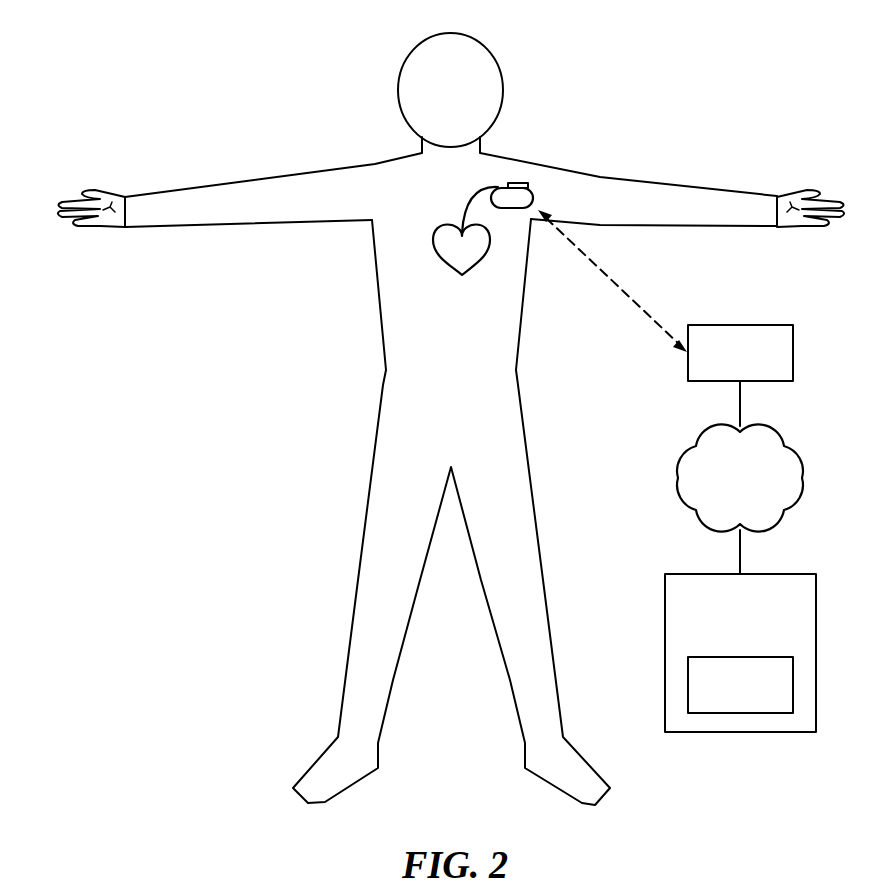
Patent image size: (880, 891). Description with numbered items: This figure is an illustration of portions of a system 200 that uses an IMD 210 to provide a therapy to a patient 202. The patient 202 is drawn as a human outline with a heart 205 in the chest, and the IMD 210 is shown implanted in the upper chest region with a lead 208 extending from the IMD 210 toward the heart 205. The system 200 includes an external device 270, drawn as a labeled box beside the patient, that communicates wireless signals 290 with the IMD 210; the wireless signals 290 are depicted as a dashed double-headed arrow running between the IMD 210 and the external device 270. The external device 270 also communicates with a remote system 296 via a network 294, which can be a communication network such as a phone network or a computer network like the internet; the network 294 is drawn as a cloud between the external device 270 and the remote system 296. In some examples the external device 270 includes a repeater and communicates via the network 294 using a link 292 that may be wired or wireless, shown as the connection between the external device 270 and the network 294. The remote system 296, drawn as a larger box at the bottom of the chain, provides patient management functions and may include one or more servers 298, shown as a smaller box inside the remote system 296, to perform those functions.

The system 200 is at (748, 48).
The patient 202 is at (378, 295).
The heart 205 is at (441, 264).
The lead 208 is at (468, 195).
The IMD 210 is at (516, 183).
The external device 270 is at (742, 324).
The wireless signals 290 is at (605, 273).
The link 292 is at (745, 402).
The network 294 is at (808, 476).
The remote system 296 is at (765, 573).
The servers 298 is at (742, 656).